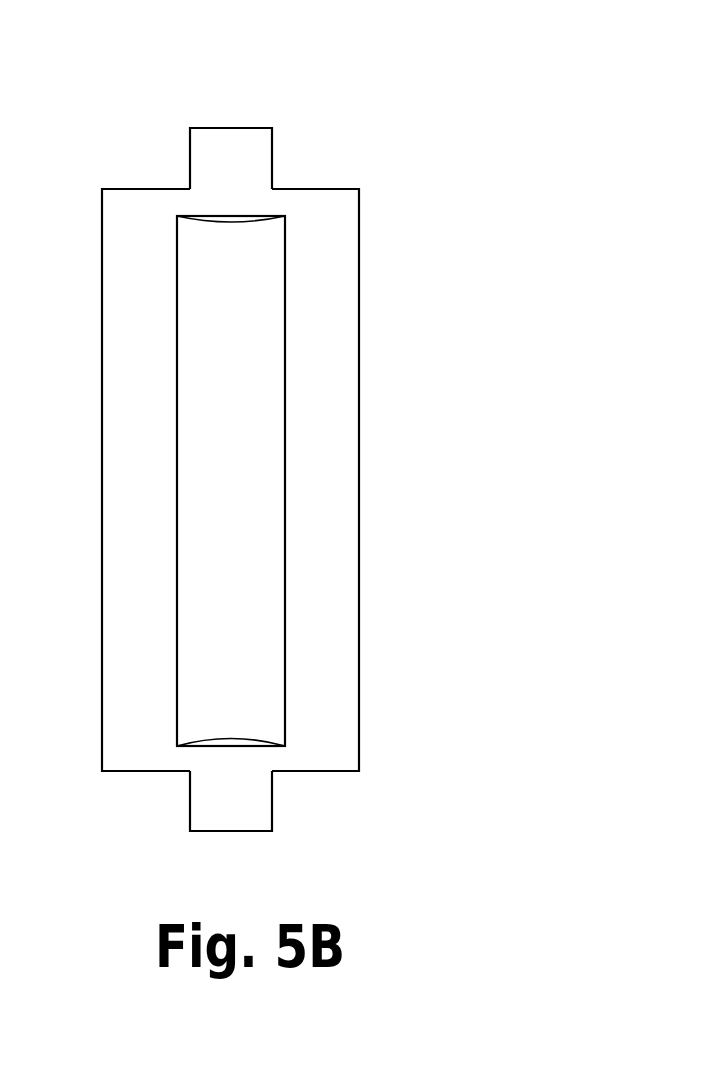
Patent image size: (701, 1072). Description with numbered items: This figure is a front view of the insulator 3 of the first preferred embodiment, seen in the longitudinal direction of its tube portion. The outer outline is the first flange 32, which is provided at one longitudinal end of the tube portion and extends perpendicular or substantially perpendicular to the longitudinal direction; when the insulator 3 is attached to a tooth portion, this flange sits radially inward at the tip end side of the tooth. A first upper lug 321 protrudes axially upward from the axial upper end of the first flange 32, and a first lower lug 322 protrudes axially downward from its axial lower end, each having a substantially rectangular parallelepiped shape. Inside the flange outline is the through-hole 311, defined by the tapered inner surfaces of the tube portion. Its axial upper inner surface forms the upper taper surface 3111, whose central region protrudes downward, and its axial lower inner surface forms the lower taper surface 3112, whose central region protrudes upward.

The insulator 3 is at (286, 492).
The first flange 32 is at (272, 492).
The first upper lug 321 is at (258, 151).
The first lower lug 322 is at (232, 802).
The through-hole 311 is at (323, 475).
The upper taper surface 3111 is at (258, 221).
The lower taper surface 3112 is at (255, 738).